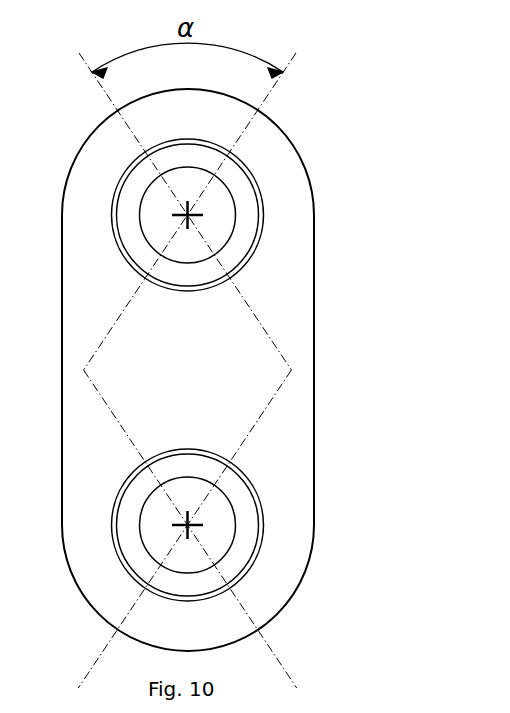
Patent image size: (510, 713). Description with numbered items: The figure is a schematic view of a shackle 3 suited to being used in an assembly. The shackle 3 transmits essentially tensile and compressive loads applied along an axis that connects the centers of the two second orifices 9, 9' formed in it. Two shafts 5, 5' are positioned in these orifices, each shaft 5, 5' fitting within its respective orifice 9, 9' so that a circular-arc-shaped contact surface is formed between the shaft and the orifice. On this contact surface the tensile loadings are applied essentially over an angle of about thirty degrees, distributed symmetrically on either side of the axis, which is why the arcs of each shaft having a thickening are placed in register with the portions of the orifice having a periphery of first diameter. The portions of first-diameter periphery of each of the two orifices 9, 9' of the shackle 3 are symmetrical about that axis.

The shackle 3 is at (295, 235).
The shaft 5 is at (237, 525).
The shaft 5' is at (237, 215).
The second orifice 9 is at (250, 525).
The second orifice 9' is at (255, 225).